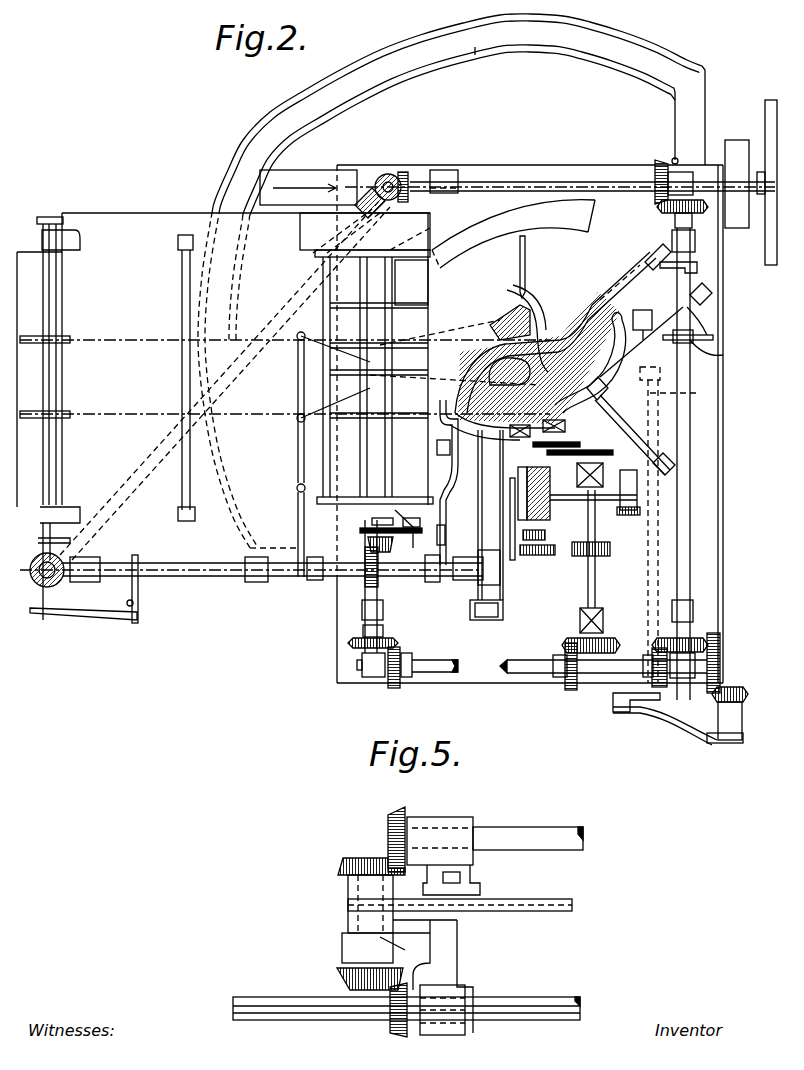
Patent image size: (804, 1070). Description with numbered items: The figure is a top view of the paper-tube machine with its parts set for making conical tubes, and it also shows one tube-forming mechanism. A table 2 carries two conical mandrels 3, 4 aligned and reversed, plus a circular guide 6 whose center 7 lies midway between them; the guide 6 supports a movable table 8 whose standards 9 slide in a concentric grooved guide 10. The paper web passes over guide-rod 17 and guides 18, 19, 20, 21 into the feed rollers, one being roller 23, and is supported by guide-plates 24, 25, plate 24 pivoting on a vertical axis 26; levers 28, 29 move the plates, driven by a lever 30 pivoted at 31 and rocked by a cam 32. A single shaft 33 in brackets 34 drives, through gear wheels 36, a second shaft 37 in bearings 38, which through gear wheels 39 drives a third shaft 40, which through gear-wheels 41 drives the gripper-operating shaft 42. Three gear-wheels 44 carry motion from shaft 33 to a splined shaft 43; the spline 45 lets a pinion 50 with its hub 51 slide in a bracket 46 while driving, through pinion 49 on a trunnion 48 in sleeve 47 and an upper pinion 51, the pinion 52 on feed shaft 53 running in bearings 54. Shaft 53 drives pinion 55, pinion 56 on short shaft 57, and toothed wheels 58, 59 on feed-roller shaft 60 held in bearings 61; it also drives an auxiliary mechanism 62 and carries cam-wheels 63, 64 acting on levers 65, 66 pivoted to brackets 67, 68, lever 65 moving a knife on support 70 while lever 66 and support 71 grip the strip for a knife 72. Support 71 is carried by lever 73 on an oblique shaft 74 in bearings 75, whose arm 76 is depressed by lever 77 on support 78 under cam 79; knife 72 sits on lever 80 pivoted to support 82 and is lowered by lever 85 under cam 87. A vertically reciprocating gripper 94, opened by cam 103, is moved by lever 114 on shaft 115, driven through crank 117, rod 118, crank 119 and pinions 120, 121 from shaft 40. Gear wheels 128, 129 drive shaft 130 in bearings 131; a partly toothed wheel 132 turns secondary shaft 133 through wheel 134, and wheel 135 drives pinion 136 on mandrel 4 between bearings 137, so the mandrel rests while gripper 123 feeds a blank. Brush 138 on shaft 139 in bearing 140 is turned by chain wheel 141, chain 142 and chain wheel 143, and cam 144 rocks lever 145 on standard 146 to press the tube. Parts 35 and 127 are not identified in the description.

In FIG. 2, the table 2 is at (725, 452).
In FIG. 2, the mandrel 3 is at (526, 262).
In FIG. 2, the mandrel 4 is at (490, 515).
In FIG. 2, the guide 6 is at (478, 218).
In FIG. 2, the center 7 is at (523, 325).
In FIG. 2, the table 8 is at (120, 213).
In FIG. 5, the table 8 is at (543, 899).
In FIG. 2, the standards 9 is at (222, 251).
In FIG. 2, the guide 10 is at (393, 66).
In FIG. 2, the guide-rod 17 is at (54, 298).
In FIG. 2, the guide 18 is at (180, 264).
In FIG. 2, the guide 19 is at (320, 318).
In FIG. 2, the guide 20 is at (375, 359).
In FIG. 2, the guide 21 is at (330, 250).
In FIG. 2, the feed roller 23 is at (428, 283).
In FIG. 2, the guide-plate 24 is at (515, 318).
In FIG. 2, the guide-plate 25 is at (553, 346).
In FIG. 2, the vertical axis 26 is at (455, 352).
In FIG. 2, the lever 28 is at (298, 414).
In FIG. 2, the lever 29 is at (300, 361).
In FIG. 2, the lever 30 is at (298, 452).
In FIG. 2, the pivot 31 is at (297, 488).
In FIG. 2, the cam 32 is at (310, 580).
In FIG. 2, the shaft 33 is at (523, 181).
In FIG. 2, the brackets 34 is at (446, 170).
In FIG. 2, the block 35 is at (735, 141).
In FIG. 2, the gear wheels 36 is at (657, 207).
In FIG. 2, the second shaft 37 is at (725, 416).
In FIG. 2, the bearings 38 is at (672, 243).
In FIG. 2, the gear wheels 39 is at (616, 645).
In FIG. 2, the third shaft 40 is at (528, 660).
In FIG. 2, the gear-wheels 41 is at (395, 645).
In FIG. 2, the gripper operating shaft 42 is at (378, 582).
In FIG. 2, the shaft 43 is at (278, 312).
In FIG. 5, the shaft 43 is at (535, 998).
In FIG. 2, the gear-wheels 44 is at (388, 173).
In FIG. 5, the spline 45 is at (553, 1015).
In FIG. 5, the bracket 46 is at (458, 950).
In FIG. 5, the vertical sleeve 47 is at (400, 948).
In FIG. 2, the trunnion 48 is at (42, 563).
In FIG. 5, the trunnion 48 is at (348, 884).
In FIG. 5, the pinion 49 is at (340, 972).
In FIG. 5, the pinion 50 is at (392, 1036).
In FIG. 5, the hub 51 is at (340, 862).
In FIG. 5, the pinion 52 is at (390, 813).
In FIG. 2, the shaft 53 is at (160, 562).
In FIG. 5, the shaft 53 is at (534, 830).
In FIG. 2, the bearings 54 is at (90, 557).
In FIG. 5, the bearings 54 is at (455, 817).
In FIG. 2, the pinion 55 is at (365, 580).
In FIG. 2, the pinion 56 is at (407, 535).
In FIG. 2, the short shaft 57 is at (360, 531).
In FIG. 2, the toothed wheel 58 is at (368, 545).
In FIG. 2, the toothed wheel 59 is at (440, 524).
In FIG. 2, the shaft 60 is at (372, 520).
In FIG. 2, the bearings 61 is at (332, 514).
In FIG. 2, the driving mechanism 62 is at (139, 603).
In FIG. 2, the cam-wheel 63 is at (462, 580).
In FIG. 2, the cam-wheel 64 is at (495, 585).
In FIG. 2, the lever 65 is at (472, 482).
In FIG. 2, the lever 66 is at (470, 427).
In FIG. 2, the bracket 67 is at (470, 480).
In FIG. 2, the bracket 68 is at (490, 618).
In FIG. 2, the support 70 is at (443, 457).
In FIG. 2, the support 71 is at (590, 361).
In FIG. 2, the knife 72 is at (617, 343).
In FIG. 2, the lever 73 is at (640, 342).
In FIG. 2, the shaft 74 is at (682, 345).
In FIG. 2, the bearings 75 is at (712, 293).
In FIG. 2, the arm 76 is at (705, 322).
In FIG. 2, the lever 77 is at (713, 337).
In FIG. 2, the support 78 is at (644, 315).
In FIG. 2, the cam 79 is at (722, 352).
In FIG. 2, the lever 80 is at (630, 460).
In FIG. 2, the vertical support 82 is at (676, 462).
In FIG. 2, the lever 85 is at (643, 504).
In FIG. 2, the cam 87 is at (725, 490).
In FIG. 2, the gripper 94 is at (611, 285).
In FIG. 2, the cam 103 is at (700, 266).
In FIG. 2, the lever 114 is at (662, 378).
In FIG. 2, the shaft 115 is at (687, 392).
In FIG. 2, the crank 117 is at (625, 706).
In FIG. 2, the rod 118 is at (668, 728).
In FIG. 2, the crank 119 is at (743, 740).
In FIG. 2, the pinion 120 is at (735, 687).
In FIG. 2, the pinion 121 is at (722, 645).
In FIG. 2, the gripper 123 is at (510, 530).
In FIG. 2, the pipe 127 is at (540, 330).
In FIG. 2, the gear wheel 128 is at (562, 678).
In FIG. 2, the gear wheel 129 is at (600, 637).
In FIG. 2, the shaft 130 is at (596, 578).
In FIG. 2, the bearings 131 is at (603, 470).
In FIG. 2, the toothed wheel 132 is at (632, 435).
In FIG. 2, the secondary shaft 133 is at (566, 427).
In FIG. 2, the toothed wheel 134 is at (573, 463).
In FIG. 2, the toothed wheel 135 is at (638, 414).
In FIG. 2, the pinion 136 is at (509, 429).
In FIG. 2, the bearings 137 is at (604, 395).
In FIG. 2, the brush 138 is at (550, 505).
In FIG. 2, the shaft 139 is at (531, 563).
In FIG. 2, the bearing 140 is at (546, 535).
In FIG. 2, the chain wheel 141 is at (550, 576).
In FIG. 2, the chain 142 is at (586, 559).
In FIG. 2, the chain wheel 143 is at (610, 549).
In FIG. 2, the cam 144 is at (593, 514).
In FIG. 2, the lever 145 is at (617, 490).
In FIG. 2, the standard 146 is at (725, 522).